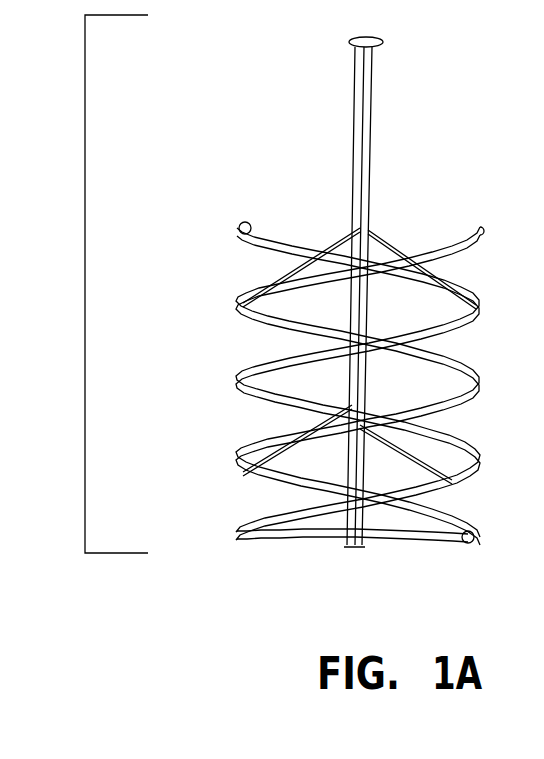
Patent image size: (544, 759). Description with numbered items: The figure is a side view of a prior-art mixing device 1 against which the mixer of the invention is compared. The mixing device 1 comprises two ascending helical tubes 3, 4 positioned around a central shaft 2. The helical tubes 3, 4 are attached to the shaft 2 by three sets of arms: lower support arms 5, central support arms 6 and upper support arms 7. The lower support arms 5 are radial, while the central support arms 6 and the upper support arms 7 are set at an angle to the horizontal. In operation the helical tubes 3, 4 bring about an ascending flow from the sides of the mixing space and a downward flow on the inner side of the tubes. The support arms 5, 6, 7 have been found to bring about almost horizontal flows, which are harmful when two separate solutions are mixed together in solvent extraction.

The mixing device 1 is at (81, 247).
The shaft 2 is at (367, 158).
The helical tube 3 is at (478, 382).
The helical tube 4 is at (483, 451).
The lower support arms 5 is at (440, 538).
The central support arms 6 is at (256, 468).
The upper support arms 7 is at (250, 246).